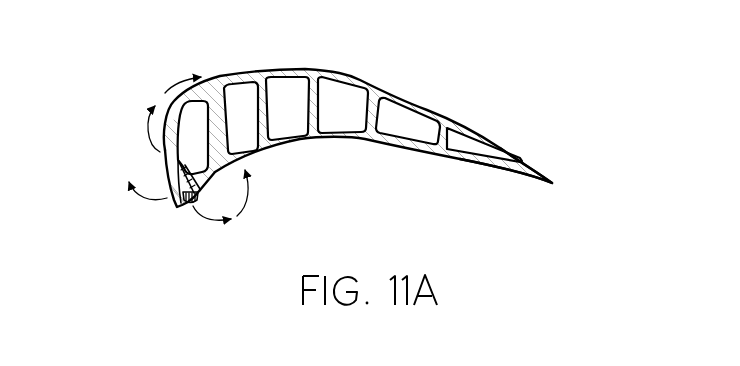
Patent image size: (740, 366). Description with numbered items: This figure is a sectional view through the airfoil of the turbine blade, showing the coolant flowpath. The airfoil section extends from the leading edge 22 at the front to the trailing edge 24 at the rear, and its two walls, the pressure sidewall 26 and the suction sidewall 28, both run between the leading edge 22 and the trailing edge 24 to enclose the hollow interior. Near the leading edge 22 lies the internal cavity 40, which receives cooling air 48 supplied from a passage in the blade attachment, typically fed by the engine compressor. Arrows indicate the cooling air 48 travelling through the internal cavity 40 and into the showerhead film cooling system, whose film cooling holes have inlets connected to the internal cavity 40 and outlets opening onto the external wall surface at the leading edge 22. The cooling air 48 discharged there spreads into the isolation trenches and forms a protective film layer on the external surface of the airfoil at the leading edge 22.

The leading edge 22 is at (165, 167).
The trailing edge 24 is at (557, 181).
The pressure sidewall 26 is at (358, 114).
The suction sidewall 28 is at (350, 71).
The internal cavity 40 is at (181, 199).
The cooling air 48 is at (152, 122).